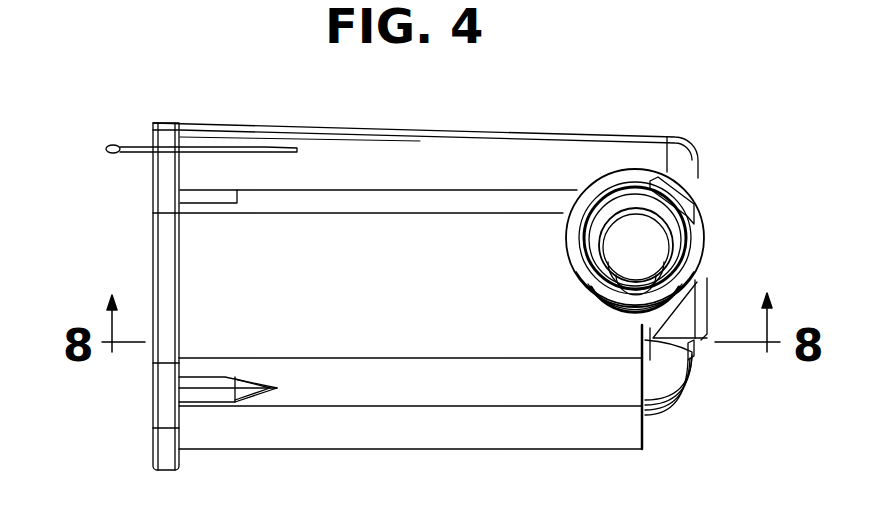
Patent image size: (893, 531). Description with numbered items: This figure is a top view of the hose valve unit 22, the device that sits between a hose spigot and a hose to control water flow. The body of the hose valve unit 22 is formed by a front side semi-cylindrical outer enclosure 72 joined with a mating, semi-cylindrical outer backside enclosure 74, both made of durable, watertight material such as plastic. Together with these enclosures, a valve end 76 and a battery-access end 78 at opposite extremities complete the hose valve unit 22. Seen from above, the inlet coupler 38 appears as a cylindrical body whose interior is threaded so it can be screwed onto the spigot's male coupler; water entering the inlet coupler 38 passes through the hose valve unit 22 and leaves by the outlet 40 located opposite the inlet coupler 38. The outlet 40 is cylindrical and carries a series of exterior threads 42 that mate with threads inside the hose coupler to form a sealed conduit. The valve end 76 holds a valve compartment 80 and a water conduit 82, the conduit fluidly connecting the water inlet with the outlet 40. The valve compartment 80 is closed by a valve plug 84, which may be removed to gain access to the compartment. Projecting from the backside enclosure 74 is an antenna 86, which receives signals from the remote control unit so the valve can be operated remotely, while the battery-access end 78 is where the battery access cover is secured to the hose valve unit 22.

The hose valve unit 22 is at (472, 124).
The inlet coupler 38 is at (706, 220).
The outlet 40 is at (658, 414).
The exterior threads 42 is at (681, 398).
The front side semi-cylindrical outer enclosure 72 is at (425, 437).
The semi-cylindrical outer backside enclosure 74 is at (337, 165).
The valve end 76 is at (672, 193).
The battery-access end 78 is at (153, 267).
The valve compartment 80 is at (704, 284).
The water conduit 82 is at (692, 366).
The valve plug 84 is at (688, 308).
The antenna 86 is at (253, 147).